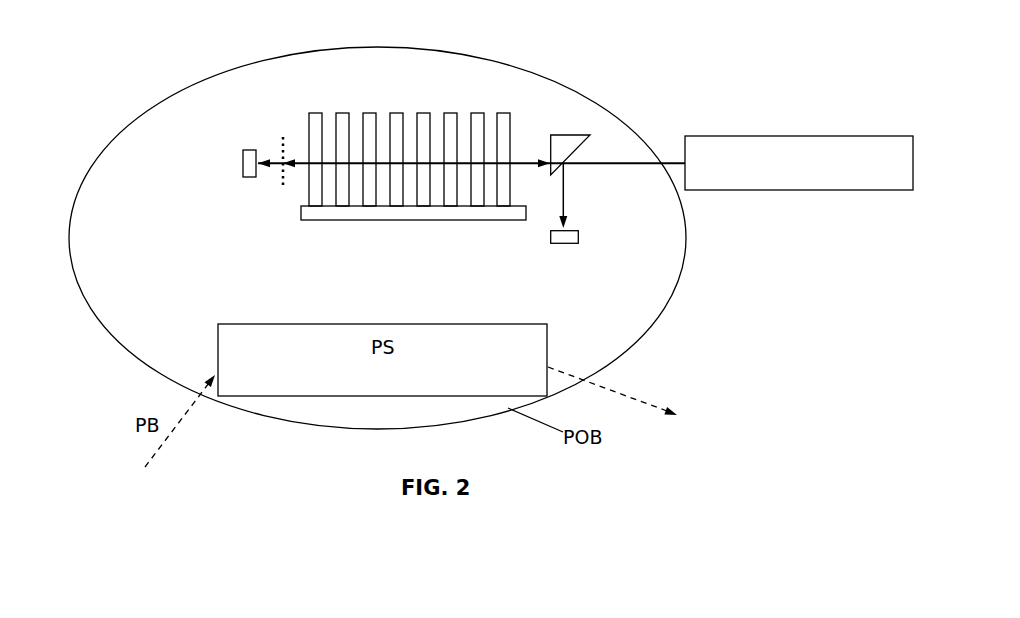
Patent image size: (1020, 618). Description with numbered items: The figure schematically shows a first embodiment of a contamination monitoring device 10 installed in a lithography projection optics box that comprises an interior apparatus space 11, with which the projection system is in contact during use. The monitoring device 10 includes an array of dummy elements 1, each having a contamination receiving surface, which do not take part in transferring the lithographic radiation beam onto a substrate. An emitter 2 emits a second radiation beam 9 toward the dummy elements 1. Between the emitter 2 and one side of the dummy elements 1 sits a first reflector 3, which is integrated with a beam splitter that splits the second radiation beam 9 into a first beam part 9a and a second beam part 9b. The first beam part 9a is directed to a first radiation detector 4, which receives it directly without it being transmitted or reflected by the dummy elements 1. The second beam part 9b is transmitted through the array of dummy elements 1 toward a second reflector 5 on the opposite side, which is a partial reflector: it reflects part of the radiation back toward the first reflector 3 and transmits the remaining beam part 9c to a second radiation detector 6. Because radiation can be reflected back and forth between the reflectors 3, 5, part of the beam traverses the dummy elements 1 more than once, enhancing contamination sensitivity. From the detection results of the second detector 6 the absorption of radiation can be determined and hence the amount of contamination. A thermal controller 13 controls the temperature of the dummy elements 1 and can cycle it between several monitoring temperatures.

The dummy element 1 is at (482, 115).
The emitter 2 is at (805, 167).
The first reflector / beam splitter 3 is at (565, 163).
The first radiation detector 4 is at (568, 243).
The second reflector 5 is at (282, 190).
The second radiation detector 6 is at (245, 150).
The second radiation beam 9 is at (620, 162).
The first beam part 9a is at (565, 197).
The second beam part 9b is at (522, 163).
The remaining beam part 9c is at (271, 162).
The monitoring device 10 is at (140, 121).
The interior apparatus space 11 is at (421, 146).
The thermal controller 13 is at (487, 215).